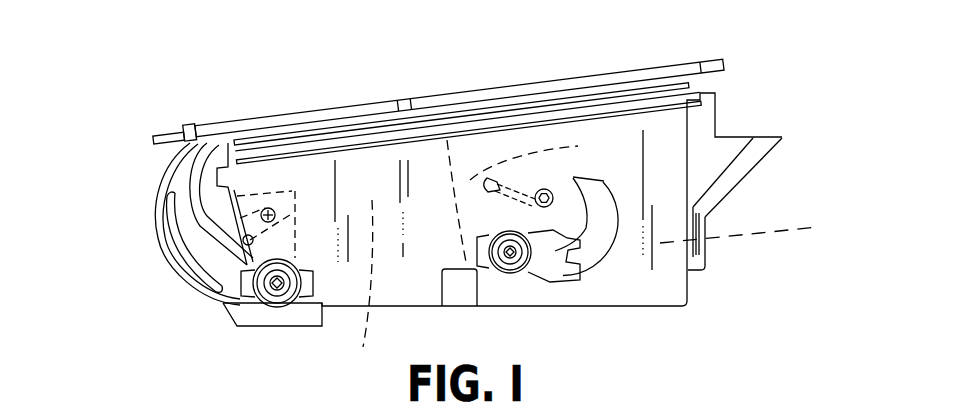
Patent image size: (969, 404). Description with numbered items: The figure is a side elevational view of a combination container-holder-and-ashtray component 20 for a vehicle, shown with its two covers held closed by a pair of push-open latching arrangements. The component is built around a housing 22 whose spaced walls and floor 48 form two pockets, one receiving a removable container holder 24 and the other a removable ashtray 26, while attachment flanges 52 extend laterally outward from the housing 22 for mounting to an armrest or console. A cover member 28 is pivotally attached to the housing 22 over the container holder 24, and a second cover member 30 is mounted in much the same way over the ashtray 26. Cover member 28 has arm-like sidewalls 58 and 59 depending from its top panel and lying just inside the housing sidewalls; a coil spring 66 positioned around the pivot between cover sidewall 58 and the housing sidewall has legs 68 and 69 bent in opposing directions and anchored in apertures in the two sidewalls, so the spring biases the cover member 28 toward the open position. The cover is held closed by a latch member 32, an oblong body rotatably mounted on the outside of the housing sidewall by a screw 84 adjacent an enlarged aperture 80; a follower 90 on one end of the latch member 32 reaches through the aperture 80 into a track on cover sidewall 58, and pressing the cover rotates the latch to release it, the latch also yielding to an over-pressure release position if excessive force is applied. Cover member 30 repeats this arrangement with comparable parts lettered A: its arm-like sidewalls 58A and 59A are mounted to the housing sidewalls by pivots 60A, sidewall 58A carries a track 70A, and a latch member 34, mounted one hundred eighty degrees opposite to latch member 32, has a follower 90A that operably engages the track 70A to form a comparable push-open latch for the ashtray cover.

The combination container-holder-and-ashtray component 20 is at (803, 62).
The housing 22 is at (690, 298).
The container holder 24 is at (758, 225).
The ashtray 26 is at (353, 292).
The cover member 28 is at (586, 76).
The cover member 30 is at (318, 112).
The latch member 32 is at (505, 273).
The latch member 34 is at (259, 307).
The floor 48 is at (392, 309).
The attachment flanges 52 is at (784, 138).
The sidewall 58 is at (604, 180).
The sidewall 58A is at (183, 278).
The sidewall 59 is at (483, 188).
The sidewall 59A is at (157, 262).
The pivot 60A is at (330, 173).
The coil spring 66 is at (550, 173).
The coil spring leg 68 is at (544, 174).
The coil spring leg 69 is at (510, 188).
The track 70A is at (185, 245).
The enlarged aperture 80 is at (593, 264).
The screw 84 is at (499, 273).
The follower 90 is at (540, 278).
The follower 90A is at (230, 313).